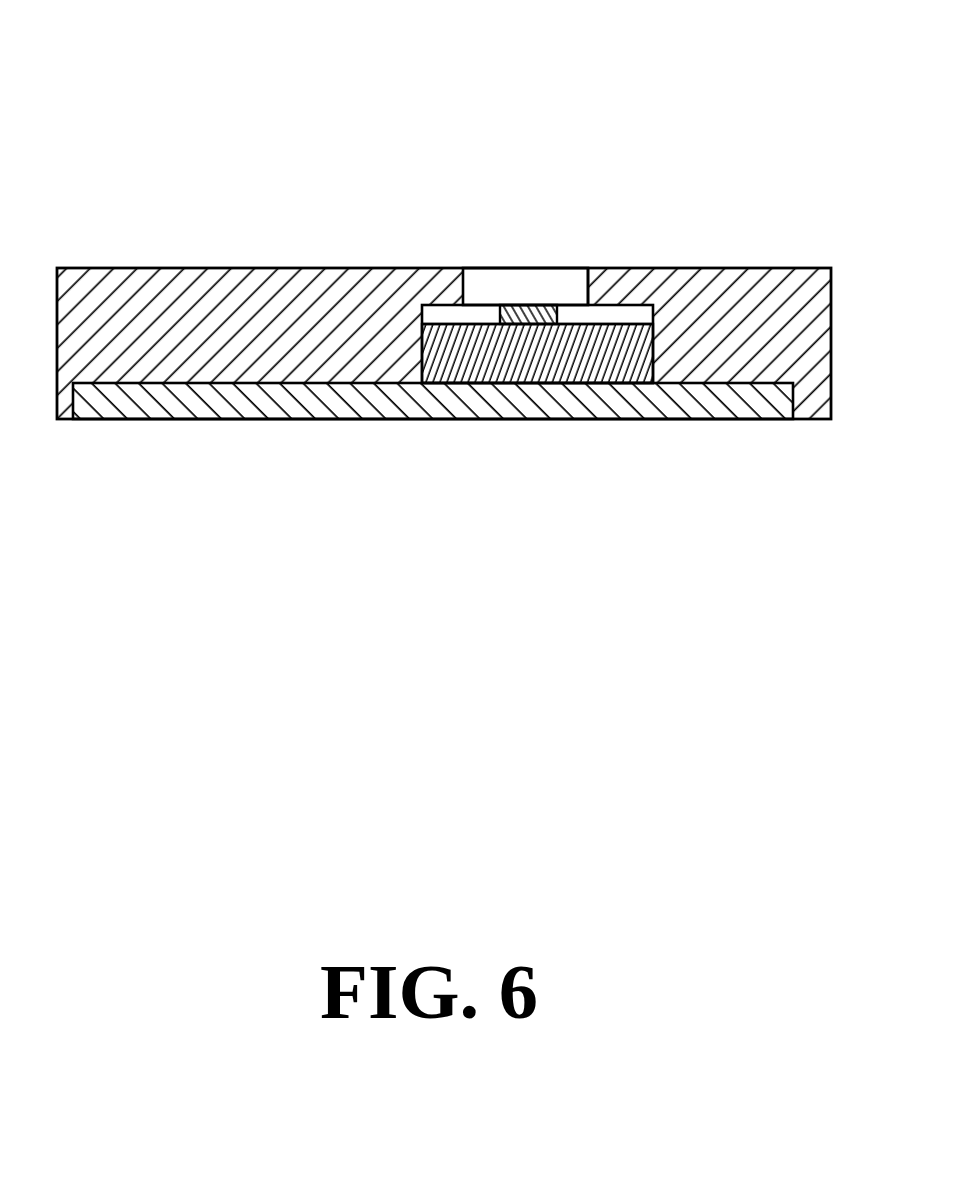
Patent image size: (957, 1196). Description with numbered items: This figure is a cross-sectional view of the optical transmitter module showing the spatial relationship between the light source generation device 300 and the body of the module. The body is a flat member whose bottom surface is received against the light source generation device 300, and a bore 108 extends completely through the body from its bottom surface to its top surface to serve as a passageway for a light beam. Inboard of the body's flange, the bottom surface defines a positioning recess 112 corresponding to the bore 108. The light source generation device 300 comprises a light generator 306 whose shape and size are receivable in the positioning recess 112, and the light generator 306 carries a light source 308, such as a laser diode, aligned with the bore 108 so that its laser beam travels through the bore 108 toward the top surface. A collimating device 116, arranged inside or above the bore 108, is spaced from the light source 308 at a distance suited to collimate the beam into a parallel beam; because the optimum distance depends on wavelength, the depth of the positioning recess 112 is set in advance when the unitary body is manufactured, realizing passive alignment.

The positioning recess 112 is at (446, 291).
The collimating device 116 is at (493, 290).
The bore 108 is at (587, 292).
The light source 308 is at (528, 305).
The light generator 306 is at (612, 360).
The light source generation device 300 is at (300, 402).